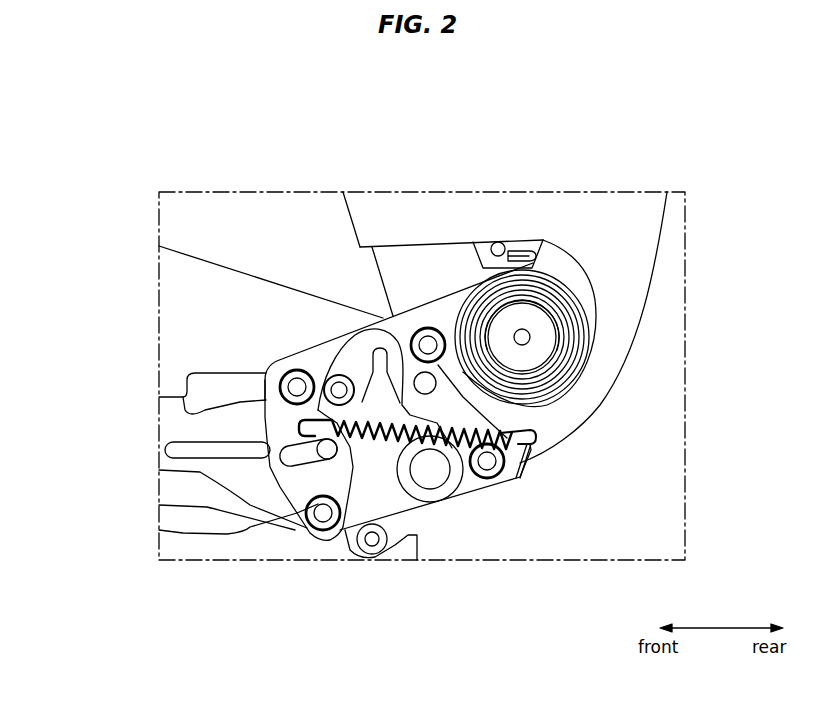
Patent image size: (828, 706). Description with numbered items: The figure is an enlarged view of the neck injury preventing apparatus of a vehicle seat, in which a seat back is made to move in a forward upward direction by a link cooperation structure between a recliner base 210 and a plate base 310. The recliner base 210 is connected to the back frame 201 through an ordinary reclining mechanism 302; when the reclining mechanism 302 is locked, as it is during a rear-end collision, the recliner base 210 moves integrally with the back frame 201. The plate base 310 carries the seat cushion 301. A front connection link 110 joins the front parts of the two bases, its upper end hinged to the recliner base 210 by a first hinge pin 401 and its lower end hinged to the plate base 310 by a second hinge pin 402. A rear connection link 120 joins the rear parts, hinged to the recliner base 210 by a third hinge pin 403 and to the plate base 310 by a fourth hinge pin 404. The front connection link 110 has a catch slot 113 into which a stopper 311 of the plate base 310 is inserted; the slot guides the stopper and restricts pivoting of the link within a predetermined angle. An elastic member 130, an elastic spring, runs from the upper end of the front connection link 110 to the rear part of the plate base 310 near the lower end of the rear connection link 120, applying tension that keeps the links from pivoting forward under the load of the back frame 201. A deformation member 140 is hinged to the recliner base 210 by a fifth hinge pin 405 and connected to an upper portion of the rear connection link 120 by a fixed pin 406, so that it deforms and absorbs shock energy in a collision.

The front connection link 110 is at (320, 458).
The catch slot 113 is at (290, 446).
The rear connection link 120 is at (455, 455).
The elastic member 130 is at (537, 438).
The deformation member 140 is at (378, 337).
The back frame 201 is at (580, 270).
The recliner base 210 is at (300, 355).
The seat cushion 301 is at (187, 317).
The reclining mechanism 302 is at (588, 313).
The plate base 310 is at (390, 507).
The stopper 311 is at (213, 482).
The first hinge pin 401 is at (280, 388).
The second hinge pin 402 is at (325, 513).
The third hinge pin 403 is at (428, 345).
The fourth hinge pin 404 is at (487, 473).
The fifth hinge pin 405 is at (338, 388).
The fixed pin 406 is at (436, 388).